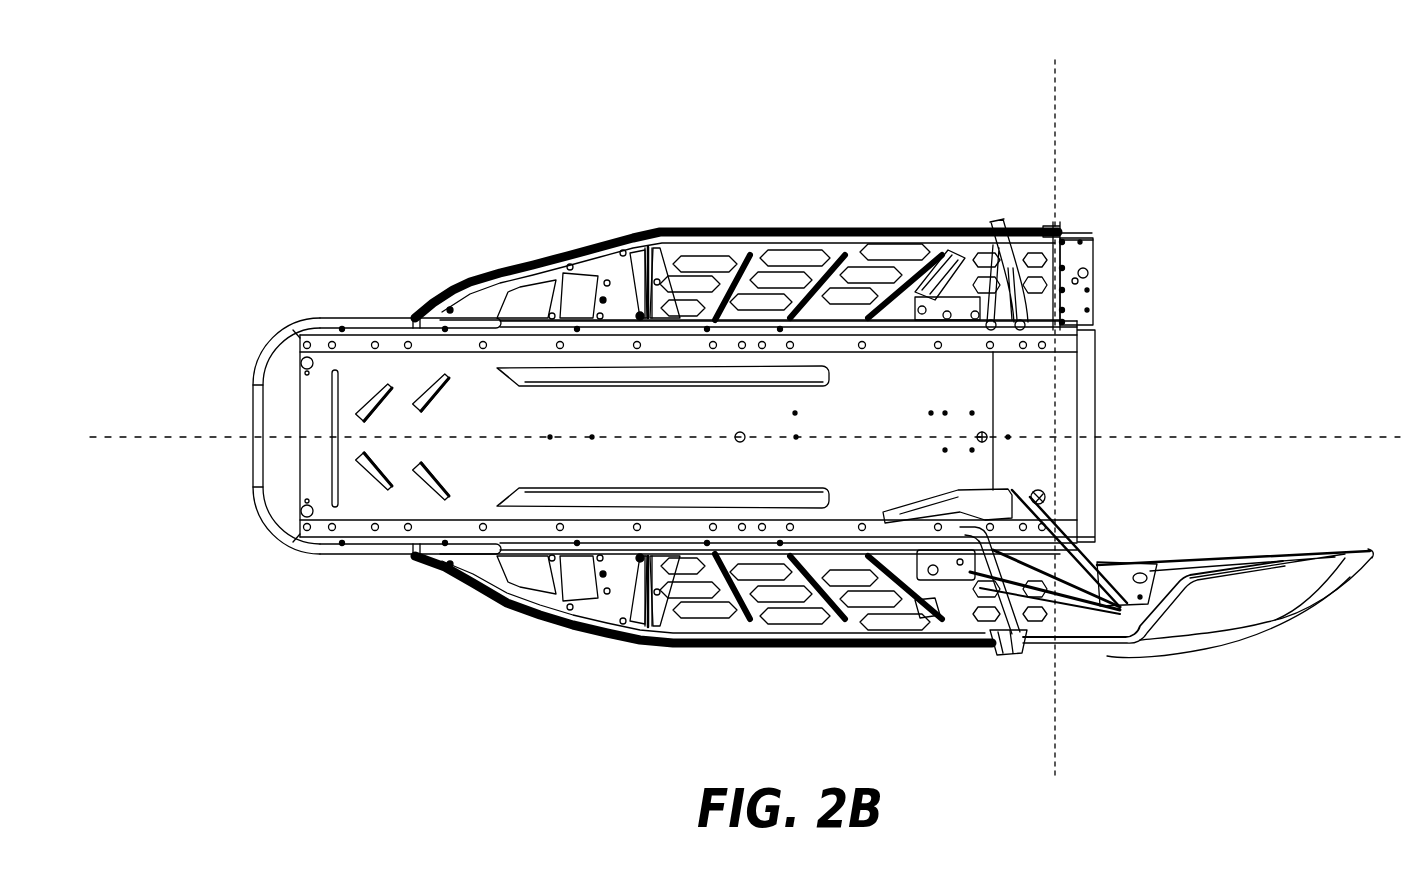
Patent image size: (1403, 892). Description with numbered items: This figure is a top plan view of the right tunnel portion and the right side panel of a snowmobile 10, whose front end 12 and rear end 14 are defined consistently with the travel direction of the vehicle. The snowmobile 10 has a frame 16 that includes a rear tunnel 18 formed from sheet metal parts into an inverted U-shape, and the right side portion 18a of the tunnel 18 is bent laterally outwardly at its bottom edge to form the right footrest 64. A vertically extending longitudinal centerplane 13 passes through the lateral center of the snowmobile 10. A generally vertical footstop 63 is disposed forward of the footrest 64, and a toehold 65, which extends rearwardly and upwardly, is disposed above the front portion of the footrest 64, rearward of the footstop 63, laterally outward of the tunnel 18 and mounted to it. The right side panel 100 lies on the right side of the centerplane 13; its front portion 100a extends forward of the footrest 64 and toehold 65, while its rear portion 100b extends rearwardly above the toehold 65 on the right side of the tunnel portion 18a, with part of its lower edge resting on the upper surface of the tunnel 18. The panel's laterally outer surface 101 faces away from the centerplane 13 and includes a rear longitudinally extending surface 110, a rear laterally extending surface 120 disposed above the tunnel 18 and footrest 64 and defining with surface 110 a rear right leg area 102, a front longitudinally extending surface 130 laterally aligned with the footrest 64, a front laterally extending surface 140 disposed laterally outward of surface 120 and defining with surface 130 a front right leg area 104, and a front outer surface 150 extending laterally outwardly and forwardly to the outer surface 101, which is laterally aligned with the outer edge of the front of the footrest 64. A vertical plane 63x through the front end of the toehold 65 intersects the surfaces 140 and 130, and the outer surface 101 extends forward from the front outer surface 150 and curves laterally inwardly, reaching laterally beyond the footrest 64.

The snowmobile 10 is at (938, 118).
The front end 12 is at (1290, 222).
The longitudinal centerplane 13 is at (170, 436).
The rear end 14 is at (248, 172).
The frame 16 is at (462, 527).
The tunnel 18 is at (674, 436).
The side portion 18a is at (545, 330).
The footstop 63 is at (1088, 272).
The vertical plane 63x is at (1060, 120).
The footrest 64 is at (658, 240).
The toehold 65 is at (960, 253).
The right side panel 100 is at (1335, 482).
The front portion 100a is at (1335, 553).
The rear portion 100b is at (967, 492).
The laterally outer surface 101 is at (1308, 587).
The rear right leg area 102 is at (925, 612).
The front right leg area 104 is at (1063, 625).
The rear longitudinally extending surface 110 is at (1010, 520).
The rear laterally extending surface 120 is at (1017, 572).
The front longitudinally extending surface 130 is at (1117, 563).
The front laterally extending surface 140 is at (1100, 615).
The front outer surface 150 is at (1042, 628).